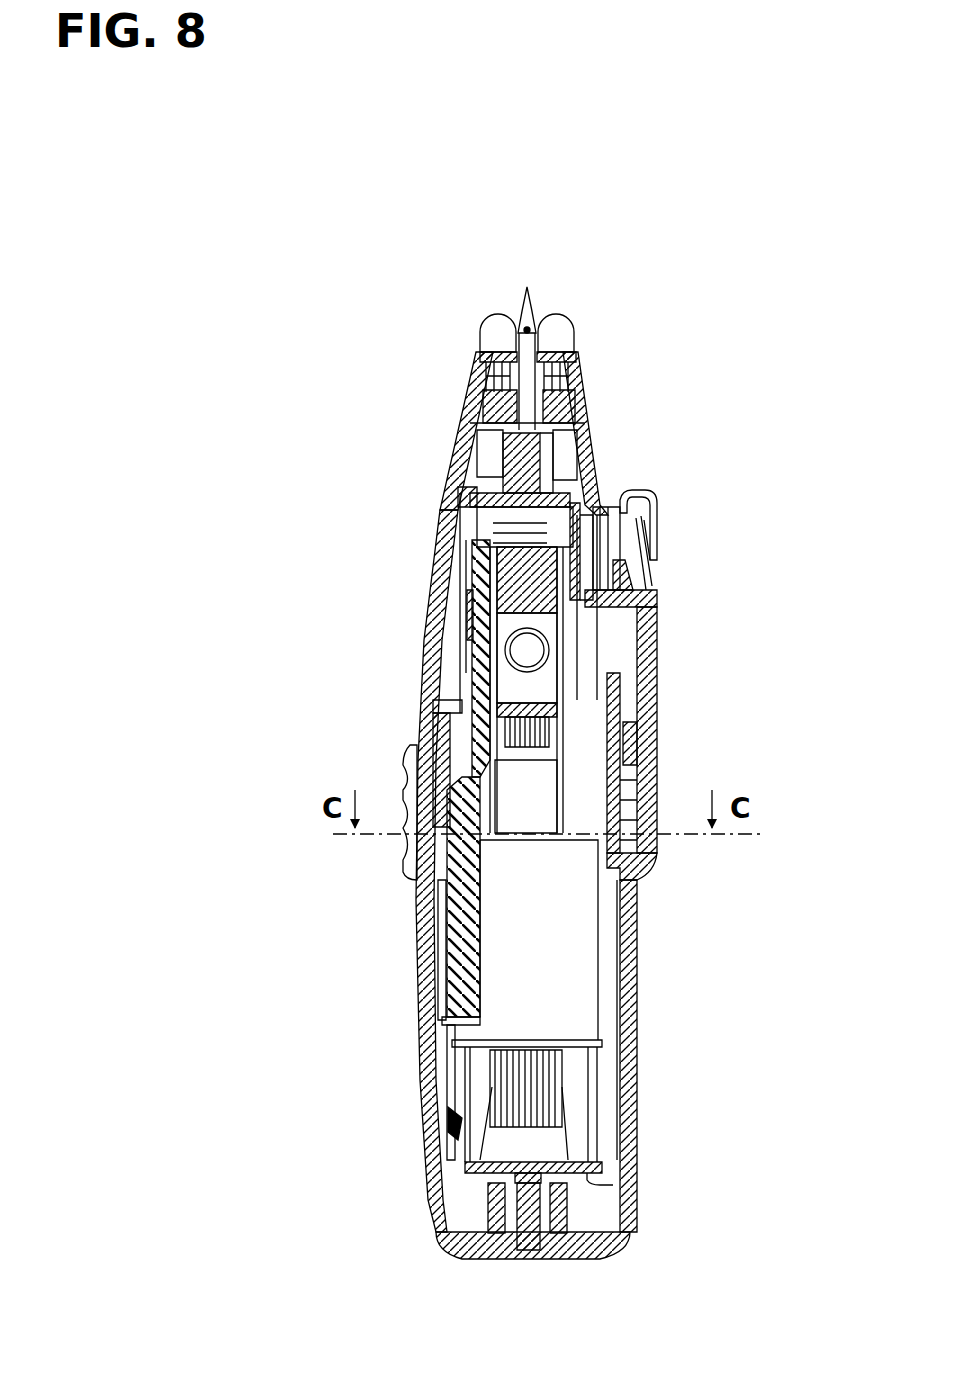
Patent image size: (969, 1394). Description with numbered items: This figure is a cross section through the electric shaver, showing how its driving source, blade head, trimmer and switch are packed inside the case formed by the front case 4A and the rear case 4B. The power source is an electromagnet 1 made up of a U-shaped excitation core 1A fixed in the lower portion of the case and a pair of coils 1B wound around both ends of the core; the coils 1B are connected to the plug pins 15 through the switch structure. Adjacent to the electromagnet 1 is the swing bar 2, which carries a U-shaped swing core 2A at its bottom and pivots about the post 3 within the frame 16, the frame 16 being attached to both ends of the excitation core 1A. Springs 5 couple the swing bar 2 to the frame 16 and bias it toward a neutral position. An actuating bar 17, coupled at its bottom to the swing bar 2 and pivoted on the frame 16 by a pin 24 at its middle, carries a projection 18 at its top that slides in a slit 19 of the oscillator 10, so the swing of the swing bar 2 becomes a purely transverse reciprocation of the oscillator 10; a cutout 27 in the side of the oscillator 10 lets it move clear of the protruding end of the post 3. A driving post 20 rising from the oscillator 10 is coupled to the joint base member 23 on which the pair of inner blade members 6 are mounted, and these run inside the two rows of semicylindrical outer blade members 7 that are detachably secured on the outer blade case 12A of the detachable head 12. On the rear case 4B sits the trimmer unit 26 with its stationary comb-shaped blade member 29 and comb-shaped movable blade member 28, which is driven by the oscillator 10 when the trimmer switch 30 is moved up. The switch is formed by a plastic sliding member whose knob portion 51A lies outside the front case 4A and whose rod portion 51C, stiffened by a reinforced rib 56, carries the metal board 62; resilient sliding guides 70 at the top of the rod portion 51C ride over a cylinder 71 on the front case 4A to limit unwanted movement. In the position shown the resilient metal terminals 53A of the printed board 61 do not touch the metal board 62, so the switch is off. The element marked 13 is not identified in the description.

The electromagnet 1 is at (637, 900).
The excitation core 1A is at (620, 797).
The coils 1B is at (600, 940).
The swing bar 2 is at (563, 600).
The swing core 2A is at (623, 728).
The post 3 is at (657, 640).
The front case 4A is at (418, 948).
The rear case 4B is at (637, 972).
The springs 5 is at (486, 655).
The inner blade members 6 is at (488, 330).
The outer blade members 7 is at (527, 297).
The oscillator 10 is at (470, 502).
The detachable head 12 is at (555, 313).
The outer blade case 12A is at (593, 383).
The mechanism unit 13 is at (673, 752).
The plug pins 15 is at (530, 1252).
The frame 16 is at (620, 823).
The actuating bar 17 is at (440, 742).
The projection 18 is at (466, 575).
The slit 19 is at (468, 548).
The driving post 20 is at (566, 457).
The joint base member 23 is at (500, 435).
The pin 24 is at (466, 622).
The trimmer unit 26 is at (657, 502).
The cutout 27 is at (572, 598).
The movable blade member 28 is at (650, 548).
The stationary comb-shaped blade member 29 is at (640, 528).
The trimmer switch 30 is at (657, 612).
The knob portion 51A is at (410, 773).
The rod portion 51C is at (492, 895).
The resilient metal terminals 53A is at (478, 1140).
The reinforced rib 56 is at (442, 980).
The printed board 61 is at (600, 1177).
The metal board 62 is at (455, 1128).
The resilient sliding guides 70 is at (410, 828).
The cylinder 71 is at (440, 726).